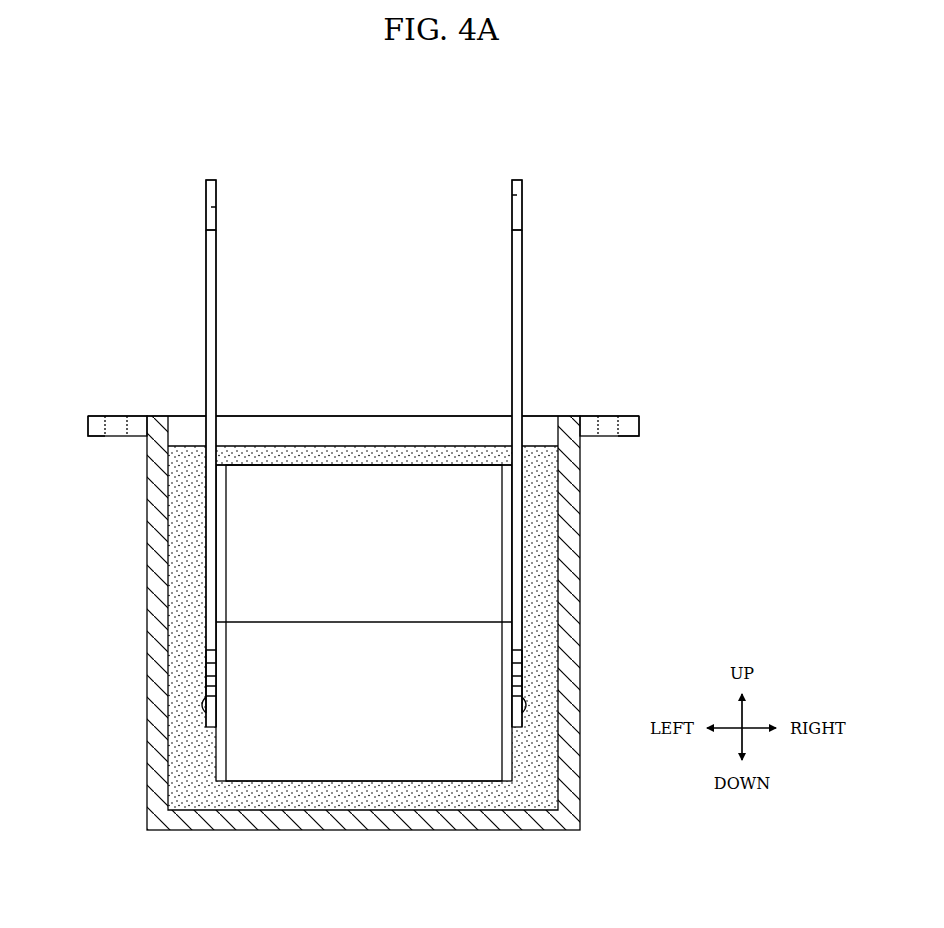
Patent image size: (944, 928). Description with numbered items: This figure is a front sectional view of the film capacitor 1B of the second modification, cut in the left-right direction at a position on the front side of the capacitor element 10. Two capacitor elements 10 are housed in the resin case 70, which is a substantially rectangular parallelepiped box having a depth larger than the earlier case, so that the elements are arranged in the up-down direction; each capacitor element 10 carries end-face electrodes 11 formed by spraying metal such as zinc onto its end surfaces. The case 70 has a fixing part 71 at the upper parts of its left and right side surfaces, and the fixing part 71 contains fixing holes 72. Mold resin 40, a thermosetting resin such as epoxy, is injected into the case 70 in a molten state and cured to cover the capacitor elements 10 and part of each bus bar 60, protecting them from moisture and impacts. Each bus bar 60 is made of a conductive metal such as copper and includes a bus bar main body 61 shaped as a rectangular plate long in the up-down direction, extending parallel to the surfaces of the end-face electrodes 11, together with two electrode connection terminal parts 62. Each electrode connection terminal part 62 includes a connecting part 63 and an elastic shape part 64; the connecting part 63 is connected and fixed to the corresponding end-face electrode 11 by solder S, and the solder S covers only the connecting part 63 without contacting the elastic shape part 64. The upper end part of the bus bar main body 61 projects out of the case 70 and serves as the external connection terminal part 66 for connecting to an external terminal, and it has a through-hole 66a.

The film capacitor 1B is at (108, 285).
The capacitor element 10 is at (395, 466).
The end-face electrode 11 is at (215, 512).
The mold resin 40 is at (312, 446).
The bus bar 60 is at (205, 347).
The bus bar main body 61 is at (217, 310).
The electrode connection terminal part 62 is at (104, 605).
The connecting part 63 is at (208, 700).
The elastic shape part 64 is at (207, 662).
The external connection terminal part 66 is at (217, 188).
The through-hole 66a is at (205, 207).
The case 70 is at (187, 416).
The fixing part 71 is at (88, 425).
The fixing hole 72 is at (118, 416).
The solder S is at (203, 557).